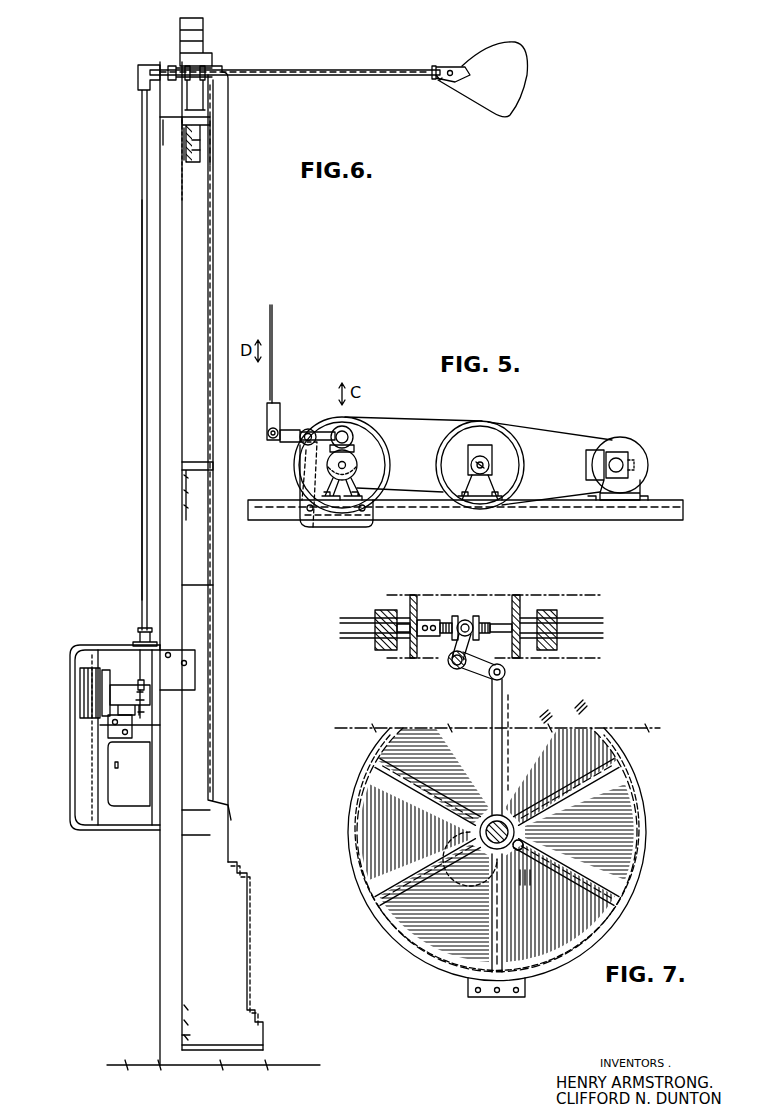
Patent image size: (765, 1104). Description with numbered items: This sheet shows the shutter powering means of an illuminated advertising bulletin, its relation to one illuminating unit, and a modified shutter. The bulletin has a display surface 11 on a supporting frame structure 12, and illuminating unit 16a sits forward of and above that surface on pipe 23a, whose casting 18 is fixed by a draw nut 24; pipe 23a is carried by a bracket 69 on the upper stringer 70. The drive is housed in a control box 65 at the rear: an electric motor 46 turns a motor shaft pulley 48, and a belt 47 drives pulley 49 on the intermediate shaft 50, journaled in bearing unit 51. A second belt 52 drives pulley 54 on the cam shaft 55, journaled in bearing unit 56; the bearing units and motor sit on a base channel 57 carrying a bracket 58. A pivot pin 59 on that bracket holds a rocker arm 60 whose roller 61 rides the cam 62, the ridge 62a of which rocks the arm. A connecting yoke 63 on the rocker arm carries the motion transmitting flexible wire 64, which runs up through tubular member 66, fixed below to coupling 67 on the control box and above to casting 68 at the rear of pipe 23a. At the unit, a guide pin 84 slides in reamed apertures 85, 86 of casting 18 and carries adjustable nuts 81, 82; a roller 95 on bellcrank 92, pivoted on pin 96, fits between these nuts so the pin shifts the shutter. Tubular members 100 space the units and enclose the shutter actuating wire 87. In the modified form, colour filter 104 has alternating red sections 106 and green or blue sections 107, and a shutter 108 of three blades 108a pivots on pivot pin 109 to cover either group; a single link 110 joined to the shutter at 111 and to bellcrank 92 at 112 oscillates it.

In FIG. 6, the display surface 11 is at (222, 757).
In FIG. 6, the supporting frame structure 12 is at (170, 438).
In FIG. 6, the illuminating unit 16a is at (483, 79).
In FIG. 6, the casting 18 is at (445, 66).
In FIG. 7, the casting 18 is at (413, 600).
In FIG. 6, the pipe 23a is at (310, 70).
In FIG. 6, the draw nut 24 is at (432, 80).
In FIG. 5, the electric motor 46 is at (632, 440).
In FIG. 5, the belt 47 is at (560, 432).
In FIG. 5, the motor shaft pulley 48 is at (634, 466).
In FIG. 6, the pulley 49 is at (80, 675).
In FIG. 5, the pulley 49 is at (497, 420).
In FIG. 5, the intermediate shaft 50 is at (475, 475).
In FIG. 5, the bearing unit 51 is at (492, 490).
In FIG. 5, the second belt 52 is at (413, 432).
In FIG. 6, the pulley 54 is at (103, 706).
In FIG. 5, the pulley 54 is at (368, 422).
In FIG. 5, the cam shaft 55 is at (338, 478).
In FIG. 5, the bearing unit 56 is at (378, 490).
In FIG. 6, the base channel 57 is at (100, 725).
In FIG. 5, the base channel 57 is at (568, 520).
In FIG. 5, the bracket 58 is at (300, 520).
In FIG. 5, the pivot pin 59 is at (305, 428).
In FIG. 5, the rocker arm 60 is at (291, 442).
In FIG. 5, the roller 61 is at (337, 426).
In FIG. 6, the cam 62 is at (145, 696).
In FIG. 5, the cam 62 is at (312, 455).
In FIG. 5, the ridge 62a is at (358, 462).
In FIG. 5, the connecting yoke 63 is at (267, 433).
In FIG. 6, the motion transmitting flexible wire 64 is at (143, 658).
In FIG. 5, the motion transmitting flexible wire 64 is at (280, 318).
In FIG. 6, the control box 65 is at (108, 648).
In FIG. 6, the tubular member 66 is at (142, 342).
In FIG. 6, the coupling 67 is at (138, 635).
In FIG. 6, the casting 68 is at (140, 80).
In FIG. 6, the bracket 69 is at (183, 68).
In FIG. 6, the upper stringer 70 is at (185, 130).
In FIG. 7, the adjustable nut 81 is at (444, 636).
In FIG. 7, the adjustable nut 82 is at (480, 620).
In FIG. 7, the guide pin 84 is at (425, 620).
In FIG. 7, the reamed aperture 85 is at (386, 640).
In FIG. 7, the reamed aperture 86 is at (525, 612).
In FIG. 7, the shutter actuating wire 87 is at (356, 612).
In FIG. 7, the bellcrank 92 is at (448, 665).
In FIG. 7, the roller 95 is at (466, 618).
In FIG. 7, the pin 96 is at (454, 670).
In FIG. 7, the tubular member 100 is at (360, 640).
In FIG. 7, the colour filter 104 is at (415, 965).
In FIG. 7, the section of colouring media 106 is at (585, 748).
In FIG. 7, the section of colouring media 107 is at (385, 748).
In FIG. 7, the shutter 108 is at (547, 742).
In FIG. 7, the blade 108a is at (556, 722).
In FIG. 7, the pivot pin 109 is at (484, 832).
In FIG. 7, the link 110 is at (492, 706).
In FIG. 7, the articulation 111 is at (520, 855).
In FIG. 7, the articulation 112 is at (506, 675).